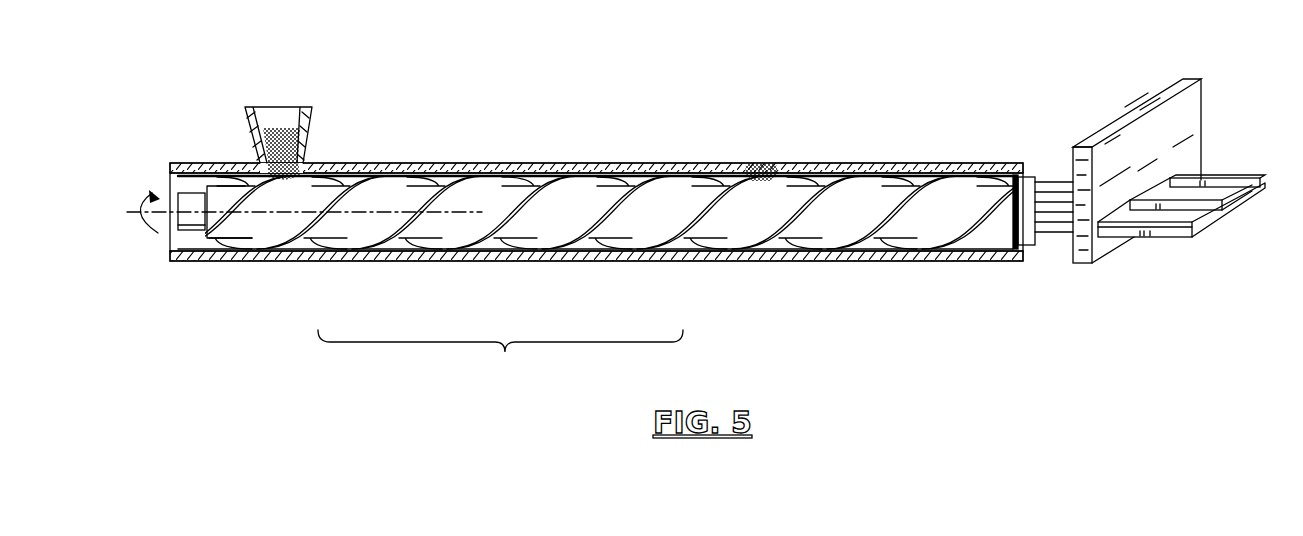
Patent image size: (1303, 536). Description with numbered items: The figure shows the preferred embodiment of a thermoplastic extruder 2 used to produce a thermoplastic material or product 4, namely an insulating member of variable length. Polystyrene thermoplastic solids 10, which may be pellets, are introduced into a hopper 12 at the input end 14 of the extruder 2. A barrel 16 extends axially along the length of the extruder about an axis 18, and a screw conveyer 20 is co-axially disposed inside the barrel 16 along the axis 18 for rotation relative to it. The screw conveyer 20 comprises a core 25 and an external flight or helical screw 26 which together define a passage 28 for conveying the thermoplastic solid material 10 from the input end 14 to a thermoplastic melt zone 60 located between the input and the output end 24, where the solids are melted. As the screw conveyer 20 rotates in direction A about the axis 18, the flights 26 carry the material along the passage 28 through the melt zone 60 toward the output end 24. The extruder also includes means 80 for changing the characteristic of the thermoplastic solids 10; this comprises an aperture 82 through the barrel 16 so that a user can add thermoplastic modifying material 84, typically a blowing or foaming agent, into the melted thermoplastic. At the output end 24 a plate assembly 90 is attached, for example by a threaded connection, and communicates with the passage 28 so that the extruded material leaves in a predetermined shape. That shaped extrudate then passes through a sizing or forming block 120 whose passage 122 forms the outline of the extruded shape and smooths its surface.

The extruder 2 is at (543, 163).
The thermoplastic material or product 4 is at (1052, 183).
The thermoplastic solids 10 is at (285, 135).
The hopper 12 is at (304, 130).
The input end 14 is at (299, 157).
The barrel 16 is at (647, 177).
The axis 18 is at (291, 211).
The screw conveyer 20 is at (564, 252).
The output end 24 is at (1007, 260).
The core 25 is at (352, 233).
The flight 26 is at (408, 230).
The passage 28 is at (497, 247).
The thermoplastic melt zone 60 is at (500, 356).
The means for changing the characteristic of the thermoplastic solids 80 is at (750, 164).
The aperture 82 is at (760, 172).
The thermoplastic modifying material 84 is at (779, 173).
The plate assembly 90 is at (1030, 247).
The sizing or forming block 120 is at (1186, 110).
The passage 122 is at (1113, 235).
The direction of rotation A is at (146, 200).